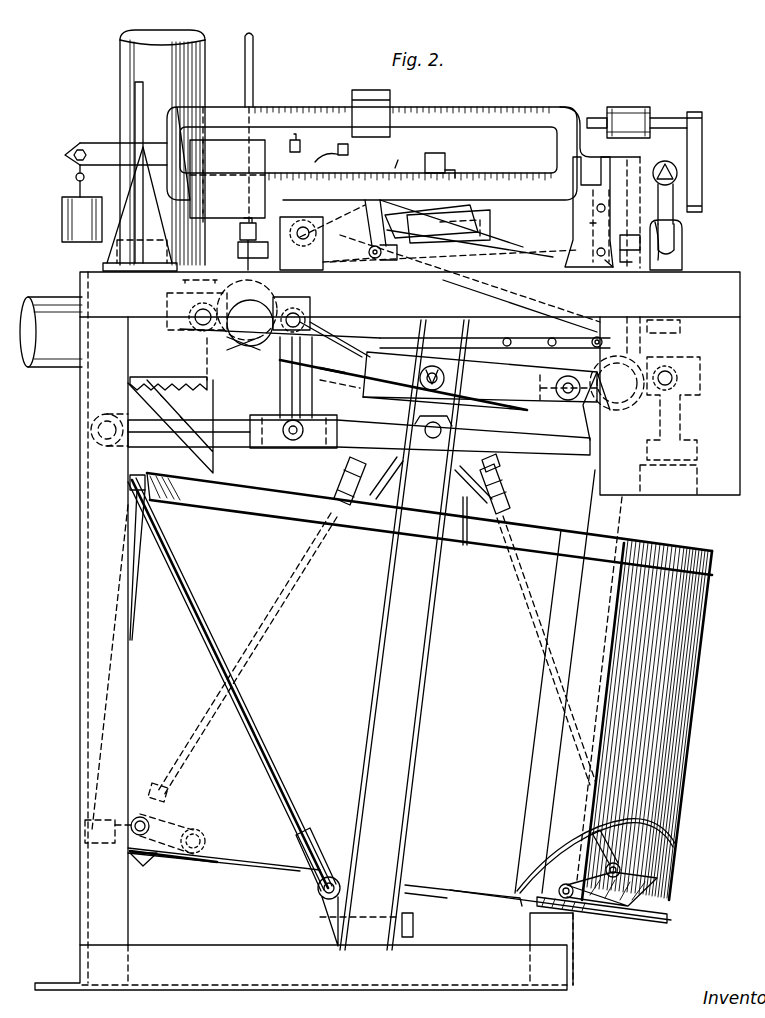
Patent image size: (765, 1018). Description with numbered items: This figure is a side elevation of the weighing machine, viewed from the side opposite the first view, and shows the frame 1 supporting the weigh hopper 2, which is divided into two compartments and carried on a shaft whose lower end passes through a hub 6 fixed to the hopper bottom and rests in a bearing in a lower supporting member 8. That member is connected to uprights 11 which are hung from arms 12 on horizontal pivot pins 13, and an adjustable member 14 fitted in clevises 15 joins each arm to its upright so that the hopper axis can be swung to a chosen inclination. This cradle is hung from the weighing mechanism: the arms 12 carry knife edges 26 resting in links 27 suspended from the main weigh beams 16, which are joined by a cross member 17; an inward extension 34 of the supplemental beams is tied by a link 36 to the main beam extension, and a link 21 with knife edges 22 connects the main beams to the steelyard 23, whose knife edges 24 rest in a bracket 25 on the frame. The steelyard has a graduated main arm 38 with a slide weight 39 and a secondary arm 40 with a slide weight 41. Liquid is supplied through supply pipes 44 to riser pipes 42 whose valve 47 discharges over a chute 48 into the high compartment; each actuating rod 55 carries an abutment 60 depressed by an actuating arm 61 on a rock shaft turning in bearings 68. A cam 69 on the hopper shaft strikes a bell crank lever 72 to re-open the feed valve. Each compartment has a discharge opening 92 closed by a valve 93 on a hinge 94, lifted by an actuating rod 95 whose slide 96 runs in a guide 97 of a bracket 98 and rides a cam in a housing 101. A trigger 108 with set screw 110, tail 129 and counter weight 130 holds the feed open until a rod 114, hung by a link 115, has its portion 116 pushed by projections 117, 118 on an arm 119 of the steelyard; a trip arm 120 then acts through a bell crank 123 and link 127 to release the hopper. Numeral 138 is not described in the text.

The frame 1 is at (80, 515).
The weigh hopper 2 is at (680, 772).
The hub 6 is at (440, 897).
The lower supporting member 8 is at (414, 932).
The uprights 11 is at (415, 714).
The arms 12 is at (233, 440).
The pivot pins 13 is at (433, 440).
The adjustable member 14 is at (208, 628).
The clevises 15 is at (150, 482).
The main weigh beams 16 is at (235, 340).
The cross member 17 is at (252, 348).
The link 21 is at (684, 258).
The knife edges 22 is at (680, 175).
The steelyard 23 is at (567, 110).
The knife edges 24 is at (590, 154).
The bracket 25 is at (574, 208).
The knife edges 26 is at (287, 450).
The links 27 is at (280, 388).
The inward extension 34 is at (438, 381).
The link 36 is at (420, 376).
The main arm 38 is at (458, 176).
The slide weight 39 is at (227, 179).
The secondary arm 40 is at (433, 108).
The slide weight 41 is at (364, 92).
The riser pipes 42 is at (130, 77).
The supply pipes 44 is at (55, 300).
The valve 47 is at (160, 378).
The chute 48 is at (155, 400).
The actuating rod 55 is at (252, 78).
The abutment 60 is at (238, 250).
The actuating arm 61 is at (240, 230).
The bearings 68 is at (301, 243).
The cam 69 is at (486, 229).
The bell crank lever 72 is at (476, 212).
The discharge opening 92 is at (625, 923).
The valve 93 is at (148, 860).
The hinge 94 is at (588, 917).
The actuating rod 95 is at (268, 643).
The slide 96 is at (345, 488).
The guide 97 is at (503, 487).
The bracket 98 is at (466, 520).
The housing 101 is at (363, 397).
The trigger 108 is at (348, 152).
The set screw 110 is at (302, 134).
The rod 114 is at (524, 252).
The link 115 is at (590, 223).
The rod portion 116 is at (660, 240).
The projection 117 is at (612, 272).
The projection 118 is at (628, 270).
The arm 119 is at (660, 222).
The trip arm 120 is at (332, 352).
The bell crank 123 is at (548, 347).
The link 127 is at (507, 347).
The tail 129 is at (398, 160).
The counter weight 130 is at (445, 158).
The pivot 138 is at (348, 231).